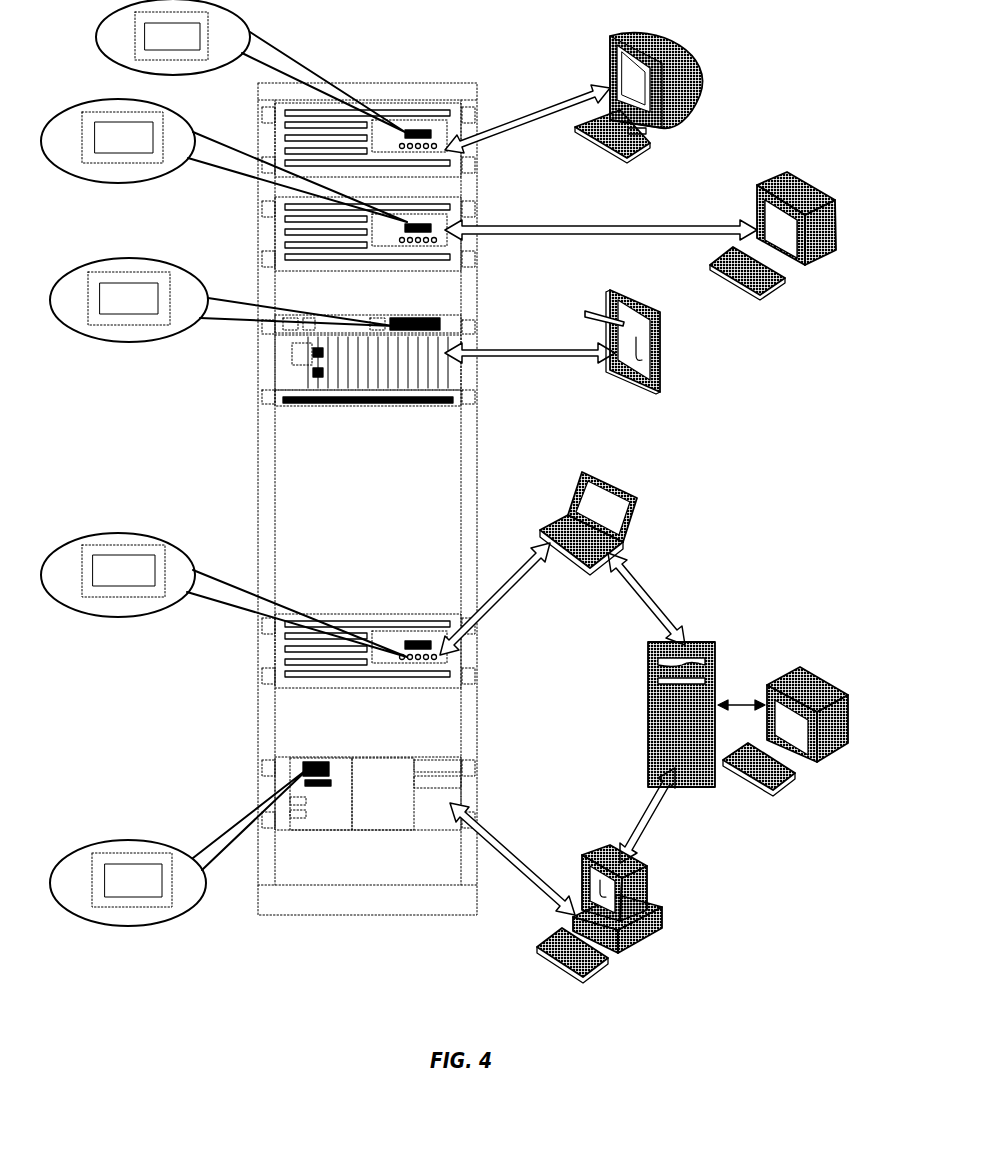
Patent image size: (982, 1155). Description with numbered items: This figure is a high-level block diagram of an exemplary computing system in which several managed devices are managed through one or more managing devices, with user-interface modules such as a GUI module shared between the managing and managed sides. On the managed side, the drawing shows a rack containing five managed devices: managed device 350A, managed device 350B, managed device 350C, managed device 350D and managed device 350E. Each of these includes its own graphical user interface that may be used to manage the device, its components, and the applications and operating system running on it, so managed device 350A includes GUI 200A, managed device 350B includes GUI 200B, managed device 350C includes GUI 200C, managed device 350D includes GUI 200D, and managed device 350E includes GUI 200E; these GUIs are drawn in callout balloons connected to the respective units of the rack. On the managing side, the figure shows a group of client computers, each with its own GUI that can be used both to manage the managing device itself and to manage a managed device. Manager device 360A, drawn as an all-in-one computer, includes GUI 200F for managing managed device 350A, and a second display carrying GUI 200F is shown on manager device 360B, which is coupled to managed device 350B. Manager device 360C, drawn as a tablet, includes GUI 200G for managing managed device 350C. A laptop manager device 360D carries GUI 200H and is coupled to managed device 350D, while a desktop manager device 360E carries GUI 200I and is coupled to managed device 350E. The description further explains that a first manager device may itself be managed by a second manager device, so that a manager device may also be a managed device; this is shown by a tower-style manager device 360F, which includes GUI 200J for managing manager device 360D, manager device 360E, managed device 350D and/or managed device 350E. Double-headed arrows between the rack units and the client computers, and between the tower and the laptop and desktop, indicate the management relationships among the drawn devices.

The GUI 200A is at (250, 66).
The GUI 200B is at (224, 160).
The GUI 200C is at (221, 300).
The GUI 200D is at (224, 595).
The GUI 200E is at (180, 846).
The GUI 200F is at (612, 82).
The GUI 200G is at (660, 352).
The agent device on laptop 200H is at (597, 500).
The agent device on desktop computer 200I is at (612, 903).
The GUI 200J is at (793, 727).
The managed device 350A is at (412, 118).
The managed device 350B is at (280, 220).
The managed device 350C is at (280, 377).
The managed device 350D is at (282, 655).
The managed device 350E is at (286, 773).
The manager device 360A is at (662, 145).
The manager device 360B is at (806, 192).
The manager device 360C is at (665, 342).
The manager device 360D is at (609, 523).
The manager device 360E is at (641, 914).
The manager device 360F is at (758, 689).